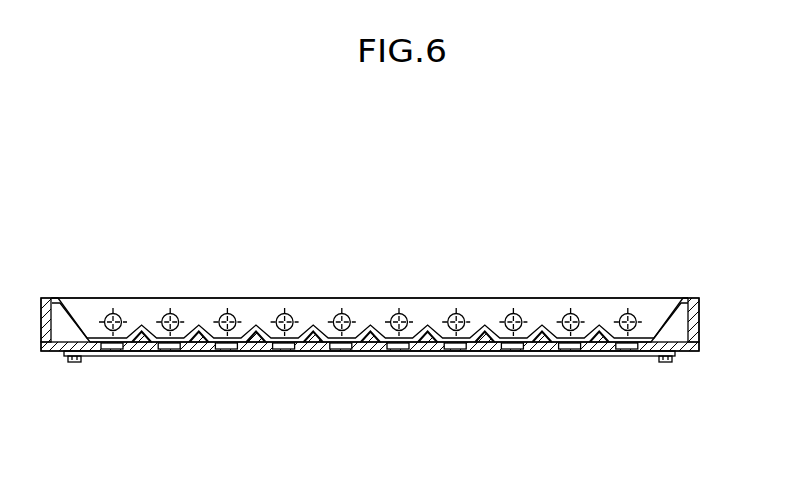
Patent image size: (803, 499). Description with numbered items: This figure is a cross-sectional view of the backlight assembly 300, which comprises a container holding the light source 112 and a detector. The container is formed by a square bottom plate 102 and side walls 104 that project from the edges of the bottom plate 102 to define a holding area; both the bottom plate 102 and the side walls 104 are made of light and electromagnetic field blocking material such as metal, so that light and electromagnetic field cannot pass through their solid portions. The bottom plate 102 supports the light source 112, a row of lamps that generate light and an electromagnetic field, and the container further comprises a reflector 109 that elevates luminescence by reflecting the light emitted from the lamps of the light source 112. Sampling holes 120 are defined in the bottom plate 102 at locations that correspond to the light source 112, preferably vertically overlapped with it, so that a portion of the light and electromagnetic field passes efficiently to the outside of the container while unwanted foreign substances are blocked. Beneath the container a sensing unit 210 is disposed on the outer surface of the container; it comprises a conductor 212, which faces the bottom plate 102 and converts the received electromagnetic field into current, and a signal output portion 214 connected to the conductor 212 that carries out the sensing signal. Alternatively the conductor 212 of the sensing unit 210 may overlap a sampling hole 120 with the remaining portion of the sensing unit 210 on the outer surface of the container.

The backlight assembly 300 is at (489, 296).
The light source 112 is at (642, 309).
The reflector 109 is at (668, 300).
The side wall 104 is at (694, 320).
The bottom plate 102 is at (686, 345).
The sampling hole 120 is at (91, 357).
The conductor 212 is at (112, 354).
The signal output portion 214 is at (145, 353).
The sensing unit 210 is at (368, 397).